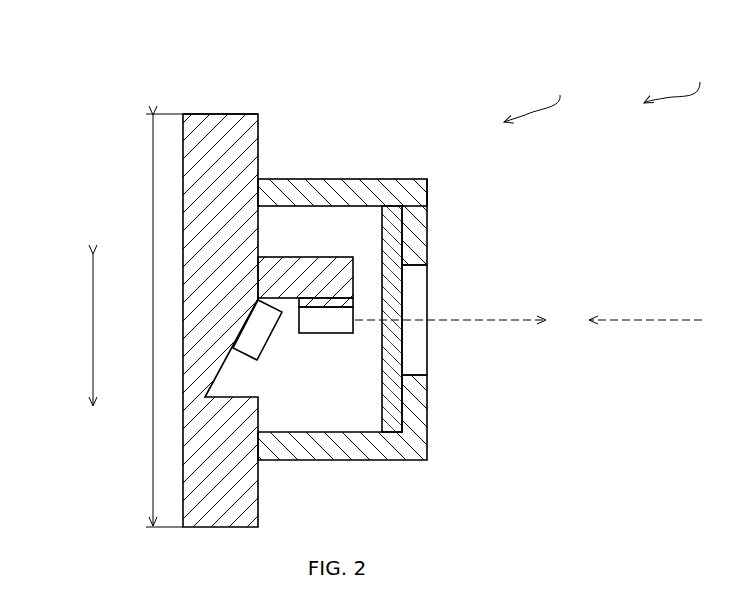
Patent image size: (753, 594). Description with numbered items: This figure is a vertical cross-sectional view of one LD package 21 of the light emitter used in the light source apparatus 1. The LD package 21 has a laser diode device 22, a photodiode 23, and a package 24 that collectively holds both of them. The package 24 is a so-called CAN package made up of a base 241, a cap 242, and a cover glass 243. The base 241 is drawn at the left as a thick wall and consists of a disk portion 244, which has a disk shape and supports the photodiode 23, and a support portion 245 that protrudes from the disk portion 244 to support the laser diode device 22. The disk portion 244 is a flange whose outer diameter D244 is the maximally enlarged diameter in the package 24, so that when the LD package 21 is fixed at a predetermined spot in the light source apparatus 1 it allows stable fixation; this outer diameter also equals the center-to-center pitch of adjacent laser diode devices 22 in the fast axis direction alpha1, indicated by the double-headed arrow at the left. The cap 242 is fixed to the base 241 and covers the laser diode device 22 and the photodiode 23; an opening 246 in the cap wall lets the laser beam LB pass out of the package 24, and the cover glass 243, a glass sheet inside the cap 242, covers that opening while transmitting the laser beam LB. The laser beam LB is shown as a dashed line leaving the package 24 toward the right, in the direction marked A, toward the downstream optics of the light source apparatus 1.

The light source apparatus 1 is at (676, 78).
The LD package 21 is at (544, 96).
The laser diode device 22 is at (333, 337).
The photodiode 23 is at (268, 338).
The package 24 is at (240, 50).
The base 241 is at (245, 110).
The cap 242 is at (332, 177).
The cover glass 243 is at (393, 205).
The disk portion 244 is at (213, 113).
The support portion 245 is at (341, 268).
The window opening 246 is at (415, 292).
The laser beam LB is at (501, 318).
The direction A is at (645, 306).
The outer diameter of the disk portion D244 is at (148, 167).
The fast axis direction alpha1 is at (93, 322).